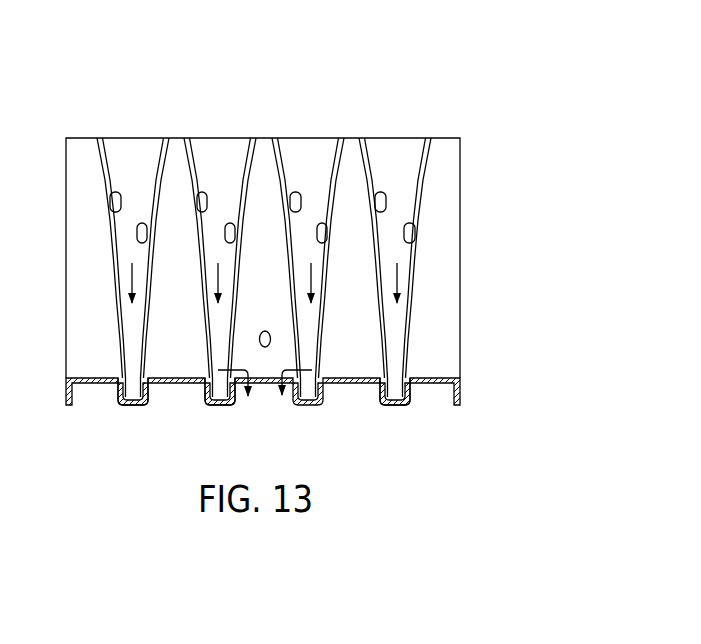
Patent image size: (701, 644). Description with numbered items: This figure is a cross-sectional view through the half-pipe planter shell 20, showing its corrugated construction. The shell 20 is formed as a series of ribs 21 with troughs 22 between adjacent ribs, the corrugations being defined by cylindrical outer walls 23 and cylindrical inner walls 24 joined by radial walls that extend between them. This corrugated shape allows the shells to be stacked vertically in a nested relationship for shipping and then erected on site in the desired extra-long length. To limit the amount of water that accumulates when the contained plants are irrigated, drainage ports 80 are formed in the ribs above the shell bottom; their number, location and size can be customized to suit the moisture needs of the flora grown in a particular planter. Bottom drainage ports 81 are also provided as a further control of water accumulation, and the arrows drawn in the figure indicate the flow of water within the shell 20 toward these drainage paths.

The shell 20 is at (419, 104).
The trough 22 is at (356, 206).
The drainage port 80 is at (414, 233).
The cylindrical inner wall 24 is at (77, 372).
The rib 21 is at (149, 401).
The cylindrical outer wall 23 is at (222, 406).
The bottom drainage port 81 is at (285, 402).